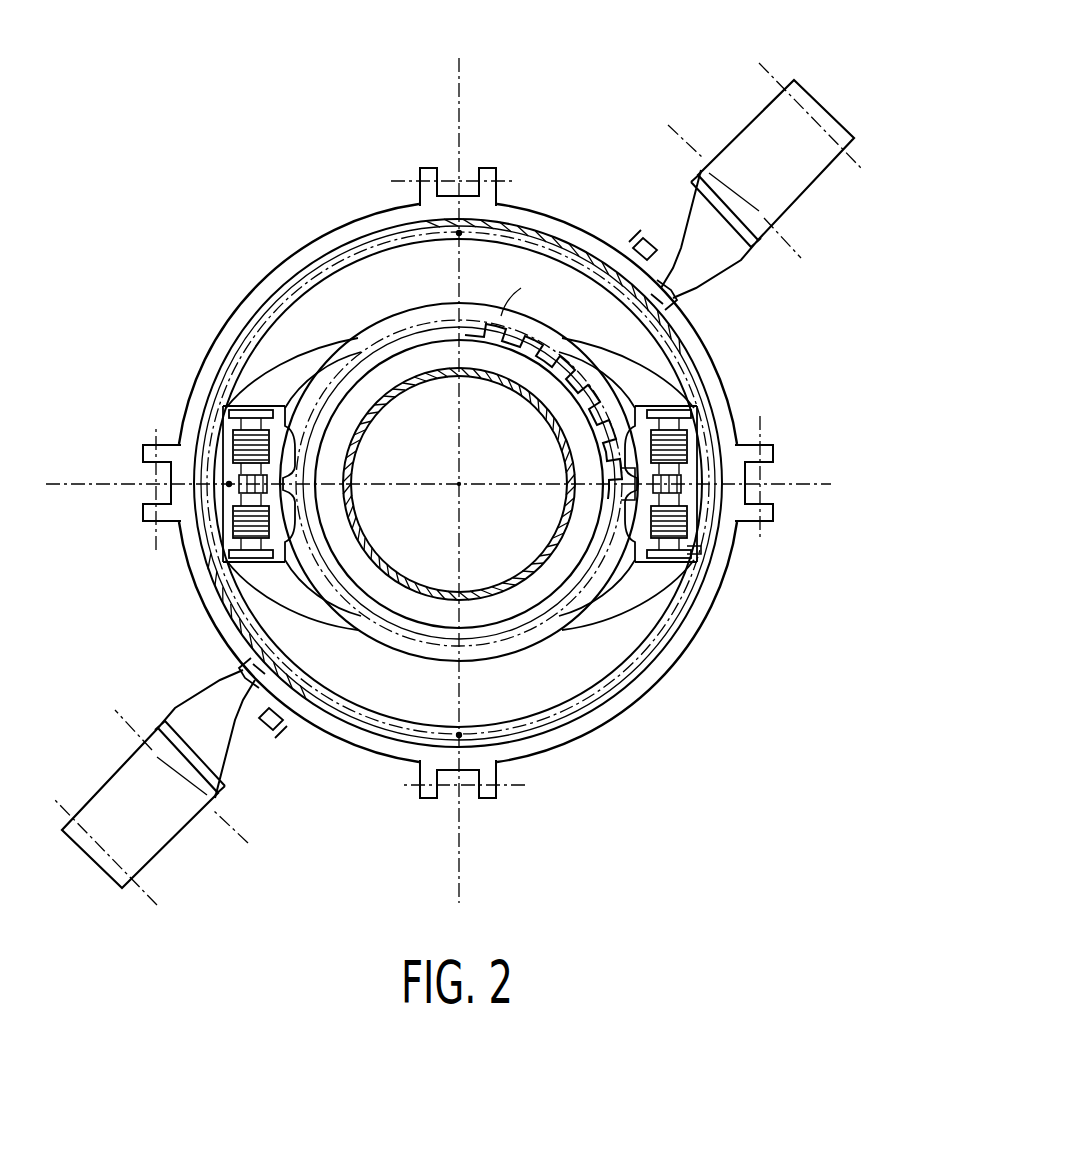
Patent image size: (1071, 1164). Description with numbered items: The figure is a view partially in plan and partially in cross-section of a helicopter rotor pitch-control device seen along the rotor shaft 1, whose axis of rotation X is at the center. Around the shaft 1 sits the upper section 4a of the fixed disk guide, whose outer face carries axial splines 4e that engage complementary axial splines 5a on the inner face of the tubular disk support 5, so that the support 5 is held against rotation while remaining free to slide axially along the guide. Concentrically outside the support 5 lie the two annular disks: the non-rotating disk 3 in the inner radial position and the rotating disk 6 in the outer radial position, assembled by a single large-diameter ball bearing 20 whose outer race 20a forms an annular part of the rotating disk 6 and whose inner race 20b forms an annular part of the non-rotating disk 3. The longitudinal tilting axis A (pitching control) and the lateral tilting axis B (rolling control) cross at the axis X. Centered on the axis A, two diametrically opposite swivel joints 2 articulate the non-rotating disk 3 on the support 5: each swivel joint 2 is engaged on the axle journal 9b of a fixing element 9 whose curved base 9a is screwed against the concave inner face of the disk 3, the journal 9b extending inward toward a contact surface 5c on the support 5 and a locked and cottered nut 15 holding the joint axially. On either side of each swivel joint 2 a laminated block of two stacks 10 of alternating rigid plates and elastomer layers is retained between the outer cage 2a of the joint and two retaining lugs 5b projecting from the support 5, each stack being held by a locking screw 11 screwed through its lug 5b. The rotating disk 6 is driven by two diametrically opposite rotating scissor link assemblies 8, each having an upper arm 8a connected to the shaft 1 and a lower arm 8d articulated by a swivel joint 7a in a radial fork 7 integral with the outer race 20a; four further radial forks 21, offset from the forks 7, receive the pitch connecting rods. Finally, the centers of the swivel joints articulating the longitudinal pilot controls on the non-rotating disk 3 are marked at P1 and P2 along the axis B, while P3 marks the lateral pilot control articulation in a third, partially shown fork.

The rotor shaft 1 is at (360, 548).
The swivel joint 2 is at (236, 506).
The outer cage 2a is at (648, 492).
The non-rotating disk 3 is at (238, 556).
The upper section 4a is at (622, 552).
The axial splines 4e is at (556, 352).
The disk support 5 is at (580, 590).
The axial splines 5a is at (503, 325).
The retaining lug 5b is at (240, 412).
The contact surface 5c is at (256, 430).
The rotating disk 6 is at (221, 312).
The fork 7 is at (690, 292).
The swivel joint 7a is at (642, 250).
The rotating scissor link assembly 8 is at (755, 85).
The upper arm 8a is at (760, 140).
The lower arm 8d is at (685, 205).
The fixing element 9 is at (226, 476).
The curved base 9a is at (700, 432).
The axle journal 9b is at (692, 500).
The laminated stack 10 is at (234, 450).
The locking screw 11 is at (672, 412).
The nut 15 is at (620, 470).
The ball bearing 20 is at (228, 664).
The outer race 20a is at (310, 258).
The inner race 20b is at (276, 658).
The fork 21 is at (480, 172).
The longitudinal tilting axis A is at (830, 478).
The lateral tilting axis B is at (470, 76).
The axis of rotation X is at (461, 490).
The swivel joint center P1 is at (458, 735).
The swivel joint center P2 is at (458, 237).
The swivel joint center P3 is at (226, 486).